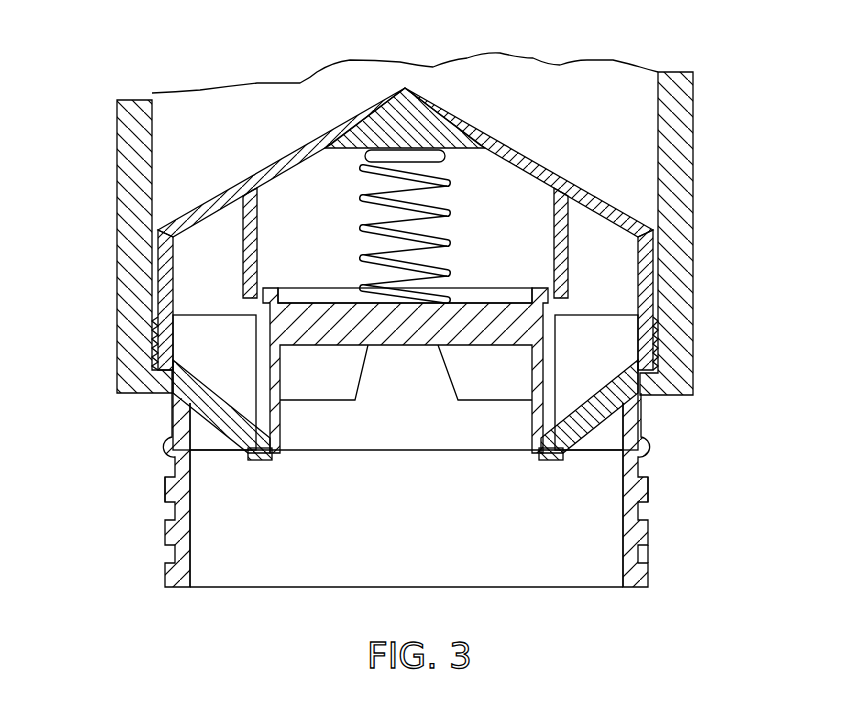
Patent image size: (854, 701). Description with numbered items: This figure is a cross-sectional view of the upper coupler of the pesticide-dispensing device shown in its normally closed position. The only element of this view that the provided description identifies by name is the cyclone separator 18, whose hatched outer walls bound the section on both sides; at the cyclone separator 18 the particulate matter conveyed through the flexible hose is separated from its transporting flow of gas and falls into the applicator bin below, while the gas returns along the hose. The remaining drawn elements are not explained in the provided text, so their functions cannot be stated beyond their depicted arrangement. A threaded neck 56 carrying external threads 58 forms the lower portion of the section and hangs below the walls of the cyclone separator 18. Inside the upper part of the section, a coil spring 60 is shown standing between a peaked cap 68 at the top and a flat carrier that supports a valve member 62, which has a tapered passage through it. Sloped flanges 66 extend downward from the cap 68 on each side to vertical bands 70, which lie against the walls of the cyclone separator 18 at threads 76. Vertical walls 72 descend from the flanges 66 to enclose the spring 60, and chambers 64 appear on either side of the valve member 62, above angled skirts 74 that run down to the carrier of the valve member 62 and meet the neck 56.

The cyclone separator 18 is at (698, 155).
The container neck 56 is at (644, 417).
The neck threads 58 is at (658, 522).
The spring 60 is at (447, 214).
The valve member 62 is at (305, 347).
The chamber 64 is at (217, 390).
The sloped flange 66 is at (204, 195).
The cap 68 is at (288, 156).
The seal ring 70 is at (190, 260).
The passage wall 72 is at (203, 312).
The skirt 74 is at (272, 458).
The threads 76 is at (666, 336).